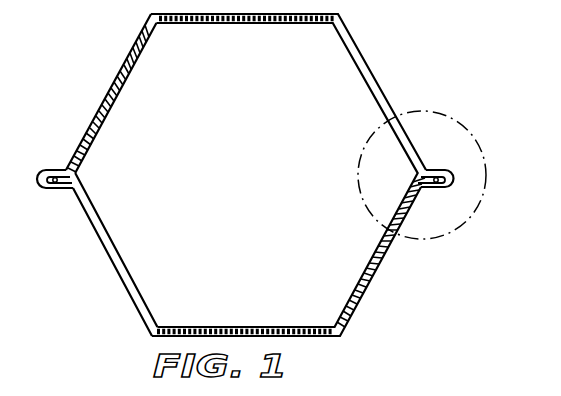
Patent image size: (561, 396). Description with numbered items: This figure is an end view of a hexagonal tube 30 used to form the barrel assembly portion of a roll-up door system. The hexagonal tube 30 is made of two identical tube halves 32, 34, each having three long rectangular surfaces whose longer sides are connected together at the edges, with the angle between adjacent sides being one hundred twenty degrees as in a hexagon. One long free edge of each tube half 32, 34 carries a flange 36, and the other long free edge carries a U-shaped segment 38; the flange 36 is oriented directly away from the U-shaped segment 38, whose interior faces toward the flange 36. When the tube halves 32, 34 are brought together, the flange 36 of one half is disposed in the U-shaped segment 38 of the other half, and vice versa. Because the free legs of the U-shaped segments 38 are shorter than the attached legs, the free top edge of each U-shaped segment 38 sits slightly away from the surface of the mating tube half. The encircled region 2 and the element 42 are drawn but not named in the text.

The detail region shown in FIG. 2 is at (436, 113).
The hexagonal tube 30 is at (248, 175).
The tube half 32 is at (107, 92).
The tube half 34 is at (102, 243).
The flange 36 is at (54, 190).
The U-shaped segment 38 is at (48, 171).
The pin 42 is at (58, 186).